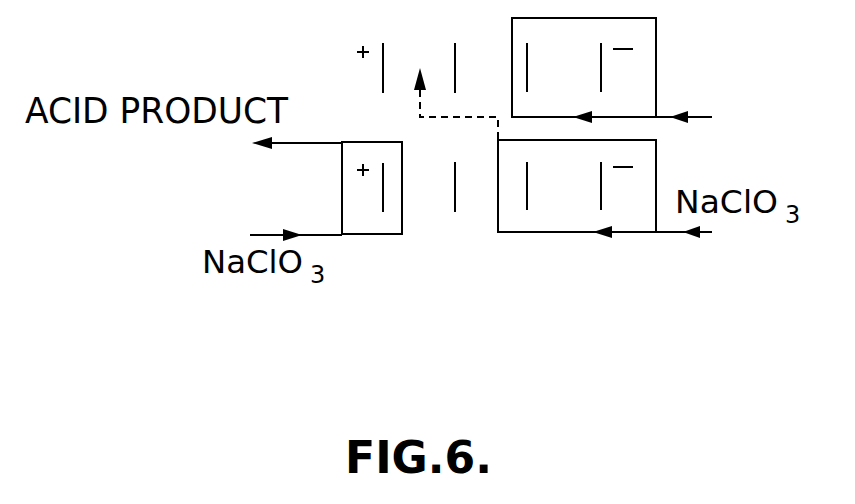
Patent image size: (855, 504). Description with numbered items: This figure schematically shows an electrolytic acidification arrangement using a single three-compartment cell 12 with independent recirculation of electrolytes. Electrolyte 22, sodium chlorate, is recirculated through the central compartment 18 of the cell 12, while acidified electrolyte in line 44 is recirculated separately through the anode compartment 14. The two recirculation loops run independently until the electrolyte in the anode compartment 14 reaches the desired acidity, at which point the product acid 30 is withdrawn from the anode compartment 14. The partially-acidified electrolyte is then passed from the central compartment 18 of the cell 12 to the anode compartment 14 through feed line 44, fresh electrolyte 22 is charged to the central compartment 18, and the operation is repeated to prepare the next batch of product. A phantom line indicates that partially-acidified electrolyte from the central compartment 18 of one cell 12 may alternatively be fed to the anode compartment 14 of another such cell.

The three-compartment cell 12 is at (682, 153).
The anode compartment 14 is at (428, 180).
The central compartment 18 is at (473, 198).
The electrolyte 22 is at (707, 234).
The product acid 30 is at (275, 143).
The feed line 44 is at (261, 234).